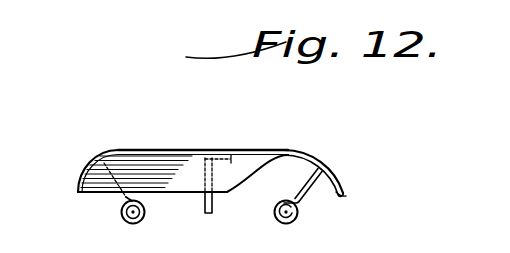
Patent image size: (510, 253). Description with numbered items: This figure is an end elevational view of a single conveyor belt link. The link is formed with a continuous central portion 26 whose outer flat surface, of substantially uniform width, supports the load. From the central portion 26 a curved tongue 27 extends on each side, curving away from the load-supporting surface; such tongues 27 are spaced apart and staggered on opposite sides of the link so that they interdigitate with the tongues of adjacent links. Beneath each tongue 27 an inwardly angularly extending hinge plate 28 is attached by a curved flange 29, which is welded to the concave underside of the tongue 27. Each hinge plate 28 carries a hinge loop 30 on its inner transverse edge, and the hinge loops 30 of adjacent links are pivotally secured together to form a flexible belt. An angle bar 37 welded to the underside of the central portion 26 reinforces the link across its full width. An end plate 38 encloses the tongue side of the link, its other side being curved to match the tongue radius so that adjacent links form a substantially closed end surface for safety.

The central portion 26 is at (193, 151).
The curved tongue 27 is at (86, 167).
The hinge plate 28 is at (124, 197).
The curved flange 29 is at (331, 197).
The hinge loop 30 is at (131, 224).
The angle bar 37 is at (212, 203).
The end plate 38 is at (193, 186).